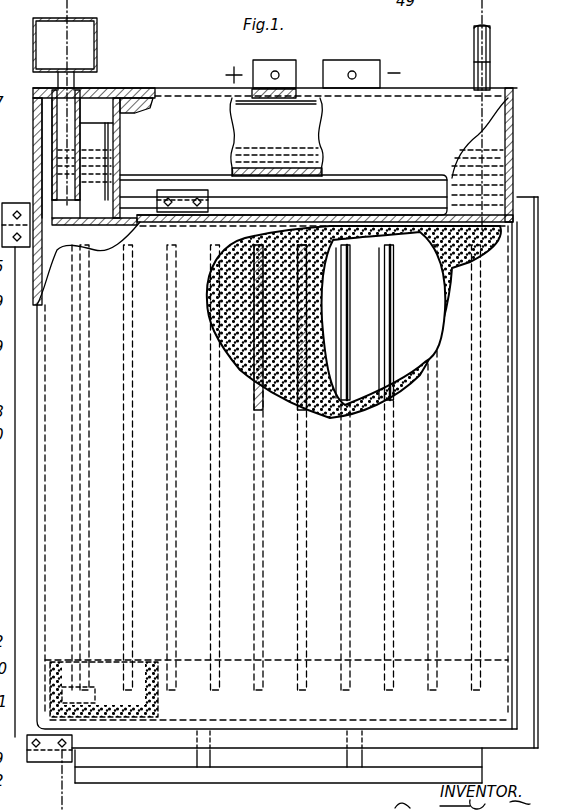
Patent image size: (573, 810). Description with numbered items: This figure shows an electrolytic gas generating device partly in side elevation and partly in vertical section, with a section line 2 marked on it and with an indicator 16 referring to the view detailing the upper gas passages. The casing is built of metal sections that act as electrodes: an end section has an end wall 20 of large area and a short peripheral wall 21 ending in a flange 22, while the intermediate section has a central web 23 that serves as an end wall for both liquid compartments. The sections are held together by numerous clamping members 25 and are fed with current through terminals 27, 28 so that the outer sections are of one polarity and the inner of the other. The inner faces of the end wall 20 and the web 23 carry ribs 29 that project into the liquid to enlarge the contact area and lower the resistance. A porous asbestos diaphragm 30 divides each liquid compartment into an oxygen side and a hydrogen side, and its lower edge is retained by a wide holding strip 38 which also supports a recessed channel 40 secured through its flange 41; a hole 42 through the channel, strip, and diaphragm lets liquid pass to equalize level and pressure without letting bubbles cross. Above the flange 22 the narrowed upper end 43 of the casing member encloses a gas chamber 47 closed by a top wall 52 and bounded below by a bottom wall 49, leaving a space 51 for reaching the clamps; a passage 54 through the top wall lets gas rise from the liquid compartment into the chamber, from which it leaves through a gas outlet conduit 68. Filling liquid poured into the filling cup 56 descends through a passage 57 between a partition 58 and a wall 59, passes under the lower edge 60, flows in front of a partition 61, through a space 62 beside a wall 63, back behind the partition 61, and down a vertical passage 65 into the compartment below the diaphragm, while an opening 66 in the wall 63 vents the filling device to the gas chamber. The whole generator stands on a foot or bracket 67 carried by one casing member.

The section line 2 is at (28, 5).
The reference to gas chamber detail 16 is at (455, 23).
The end wall 20 is at (277, 475).
The peripheral wall 21 is at (370, 219).
The flange 22 is at (296, 208).
The central web 23 is at (384, 318).
The clamping member 25 is at (192, 192).
The terminal 27 is at (288, 67).
The terminal 28 is at (362, 67).
The rib 29 is at (340, 348).
The porous diaphragm 30 is at (272, 240).
The holding strip 38 is at (287, 680).
The recessed channel 40 is at (143, 683).
The flange 41 is at (162, 688).
The hole 42 is at (84, 684).
The upper end of casing member 43 is at (398, 122).
The gas chamber 47 is at (252, 125).
The bottom wall 49 is at (285, 170).
The space 51 is at (283, 190).
The top wall 52 is at (148, 94).
The passage 54 is at (487, 215).
The filling cup 56 is at (65, 54).
The passage 57 is at (62, 137).
The partition 58 is at (100, 158).
The wall 59 is at (55, 157).
The lower edge of partition 60 is at (94, 203).
The partition 61 is at (118, 160).
The space 62 is at (140, 165).
The wall 63 is at (135, 135).
The vertically extending passage 65 is at (47, 181).
The opening 66 is at (120, 110).
The foot or bracket 67 is at (176, 786).
The gas outlet conduit 68 is at (490, 58).